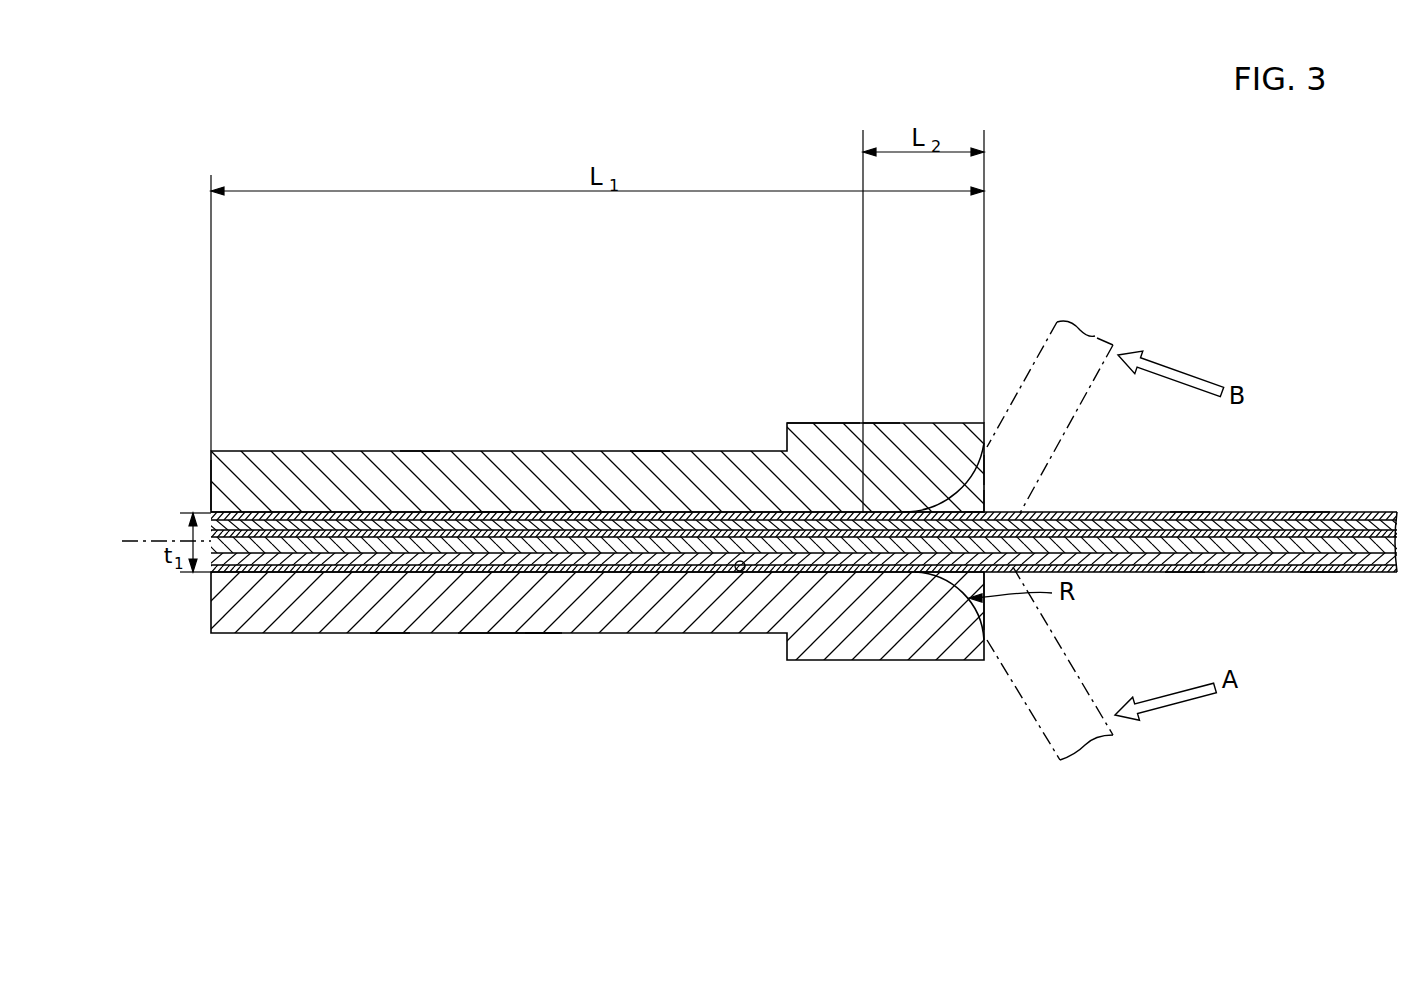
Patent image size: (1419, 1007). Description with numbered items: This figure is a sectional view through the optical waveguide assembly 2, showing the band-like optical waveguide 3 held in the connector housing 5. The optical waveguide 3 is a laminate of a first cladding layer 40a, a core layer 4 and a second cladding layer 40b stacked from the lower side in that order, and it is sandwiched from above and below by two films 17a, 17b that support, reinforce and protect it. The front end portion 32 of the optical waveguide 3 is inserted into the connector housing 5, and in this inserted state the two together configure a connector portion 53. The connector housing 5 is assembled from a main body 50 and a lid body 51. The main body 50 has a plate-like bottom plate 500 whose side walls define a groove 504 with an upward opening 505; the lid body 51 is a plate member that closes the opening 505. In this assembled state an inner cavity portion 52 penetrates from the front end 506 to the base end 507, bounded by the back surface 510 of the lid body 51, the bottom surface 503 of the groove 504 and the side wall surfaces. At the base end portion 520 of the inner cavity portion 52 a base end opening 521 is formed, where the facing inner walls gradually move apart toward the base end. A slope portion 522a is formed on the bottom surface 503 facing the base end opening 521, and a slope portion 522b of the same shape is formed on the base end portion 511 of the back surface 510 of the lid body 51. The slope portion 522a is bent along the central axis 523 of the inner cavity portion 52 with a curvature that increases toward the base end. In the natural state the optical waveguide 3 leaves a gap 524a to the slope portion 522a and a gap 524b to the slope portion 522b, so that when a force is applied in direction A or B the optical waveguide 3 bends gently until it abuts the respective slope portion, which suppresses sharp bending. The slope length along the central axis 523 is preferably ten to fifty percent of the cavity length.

The optical waveguide assembly 2 is at (1153, 213).
The optical waveguide 3 is at (1275, 500).
The core layer 4 is at (1350, 540).
The connector housing 5 is at (878, 400).
The film 17a is at (1190, 512).
The film 17b is at (1185, 572).
The front end portion 32 is at (543, 633).
The first cladding layer 40a is at (1325, 565).
The second cladding layer 40b is at (1310, 520).
The main body 50 is at (283, 633).
The lid body 51 is at (296, 451).
The inner cavity portion 52 is at (645, 510).
The connector portion 53 is at (458, 715).
The bottom plate 500 is at (395, 602).
The bottom surface 503 is at (740, 572).
The groove 504 is at (420, 512).
The opening 505 is at (492, 510).
The front end 506 is at (210, 487).
The base end 507 is at (990, 640).
The back surface 510 is at (585, 512).
The base end portion 511 is at (846, 498).
The base end portion 520 is at (980, 500).
The base end opening 521 is at (972, 490).
The slope portion 522a is at (918, 578).
The slope portion 522b is at (990, 470).
The central axis 523 is at (135, 541).
The gap 524a is at (960, 585).
The gap 524b is at (950, 507).